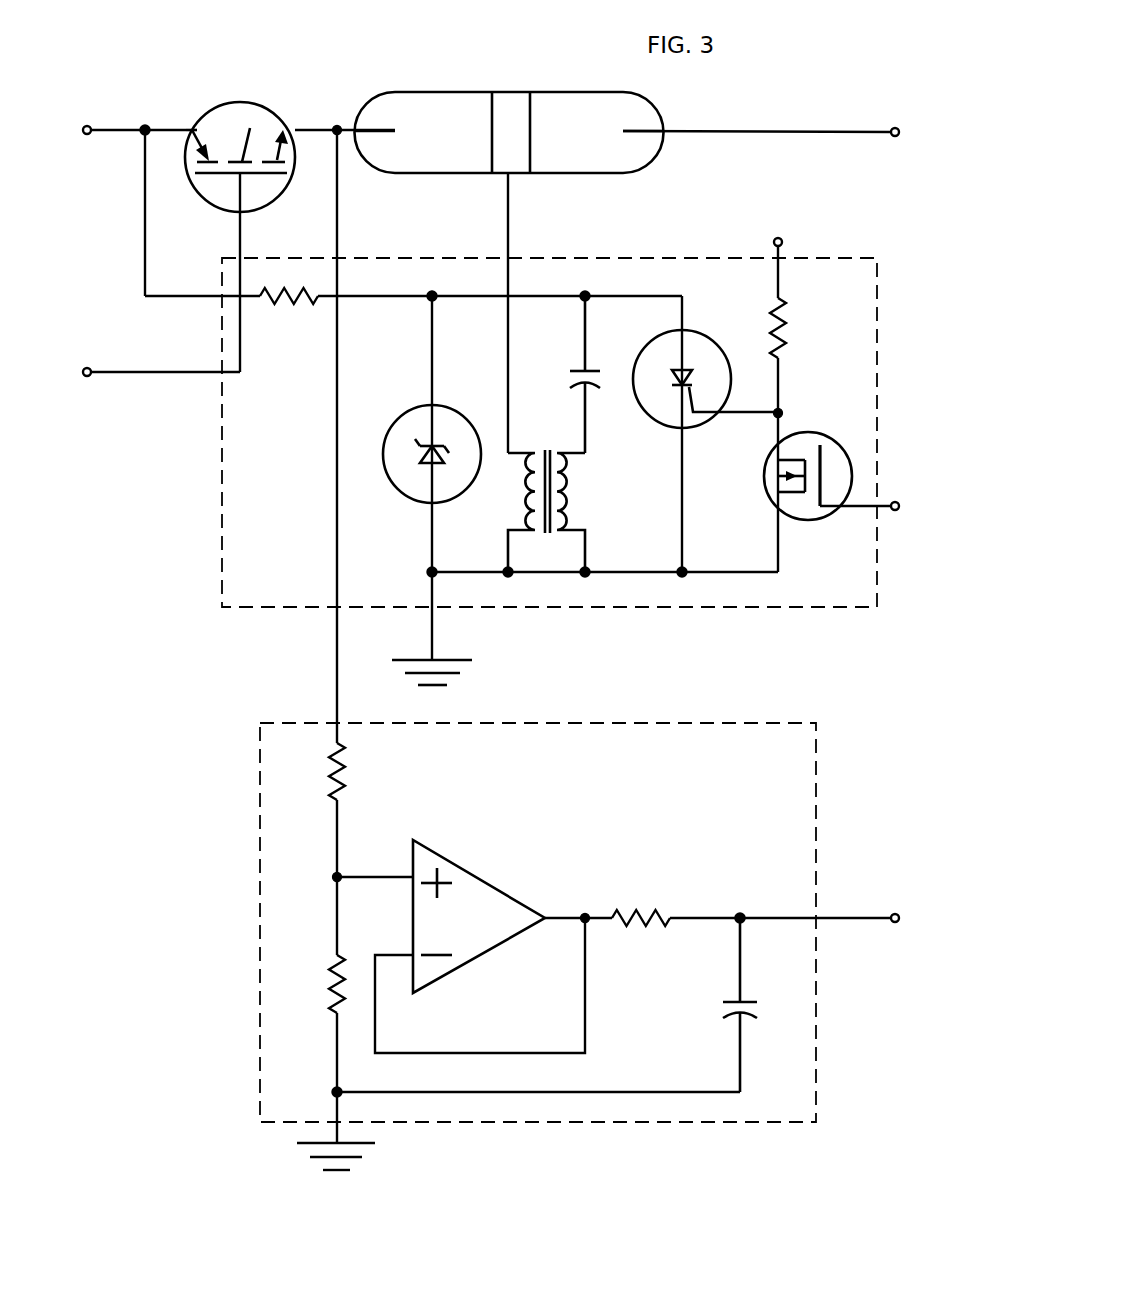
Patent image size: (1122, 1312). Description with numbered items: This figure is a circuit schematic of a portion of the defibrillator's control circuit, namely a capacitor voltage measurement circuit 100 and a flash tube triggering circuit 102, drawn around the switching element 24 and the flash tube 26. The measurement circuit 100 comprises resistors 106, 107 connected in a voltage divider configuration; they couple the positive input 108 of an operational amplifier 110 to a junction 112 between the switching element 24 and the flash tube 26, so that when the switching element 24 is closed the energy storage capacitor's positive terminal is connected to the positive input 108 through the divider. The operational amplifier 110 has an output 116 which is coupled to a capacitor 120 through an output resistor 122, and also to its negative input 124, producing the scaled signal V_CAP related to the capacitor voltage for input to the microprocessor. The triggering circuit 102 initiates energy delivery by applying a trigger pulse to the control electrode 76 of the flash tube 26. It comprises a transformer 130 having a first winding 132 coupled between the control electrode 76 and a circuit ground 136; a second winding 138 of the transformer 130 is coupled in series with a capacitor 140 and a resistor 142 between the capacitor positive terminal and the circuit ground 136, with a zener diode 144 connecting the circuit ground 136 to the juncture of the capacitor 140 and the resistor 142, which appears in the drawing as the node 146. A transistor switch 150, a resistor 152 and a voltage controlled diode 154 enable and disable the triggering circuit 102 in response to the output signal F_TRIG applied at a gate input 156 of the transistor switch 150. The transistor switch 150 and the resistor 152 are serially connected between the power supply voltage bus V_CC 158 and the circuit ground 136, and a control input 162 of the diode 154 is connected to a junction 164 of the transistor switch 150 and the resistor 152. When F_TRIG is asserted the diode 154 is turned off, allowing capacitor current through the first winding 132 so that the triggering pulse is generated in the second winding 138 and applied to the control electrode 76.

The switching element 24 is at (260, 100).
The flash tube 26 is at (435, 92).
The control electrode 76 is at (490, 177).
The capacitor voltage measurement circuit 100 is at (260, 750).
The flash tube triggering circuit 102 is at (222, 530).
The resistor 106 is at (345, 762).
The resistor 107 is at (322, 994).
The positive input 108 is at (410, 877).
The operational amplifier 110 is at (490, 885).
The junction 112 is at (338, 128).
The output 116 is at (585, 915).
The capacitor 120 is at (732, 1000).
The output resistor 122 is at (662, 910).
The negative input 124 is at (410, 953).
The transformer 130 is at (551, 477).
The first winding 132 is at (533, 514).
The circuit ground 136 is at (452, 657).
The second winding 138 is at (560, 513).
The capacitor 140 is at (585, 368).
The resistor 142 is at (272, 305).
The zener diode 144 is at (467, 413).
The node 146 is at (431, 299).
The transistor switch 150 is at (767, 497).
The resistor 152 is at (785, 331).
The voltage controlled diode 154 is at (705, 387).
The gate input 156 is at (853, 510).
The power supply voltage bus 158 is at (778, 238).
The control input 162 is at (727, 420).
The junction 164 is at (781, 411).